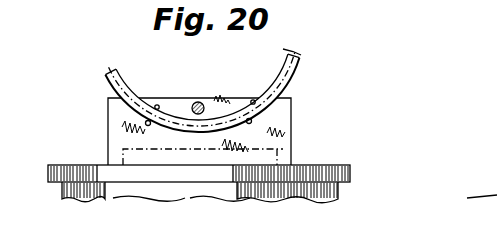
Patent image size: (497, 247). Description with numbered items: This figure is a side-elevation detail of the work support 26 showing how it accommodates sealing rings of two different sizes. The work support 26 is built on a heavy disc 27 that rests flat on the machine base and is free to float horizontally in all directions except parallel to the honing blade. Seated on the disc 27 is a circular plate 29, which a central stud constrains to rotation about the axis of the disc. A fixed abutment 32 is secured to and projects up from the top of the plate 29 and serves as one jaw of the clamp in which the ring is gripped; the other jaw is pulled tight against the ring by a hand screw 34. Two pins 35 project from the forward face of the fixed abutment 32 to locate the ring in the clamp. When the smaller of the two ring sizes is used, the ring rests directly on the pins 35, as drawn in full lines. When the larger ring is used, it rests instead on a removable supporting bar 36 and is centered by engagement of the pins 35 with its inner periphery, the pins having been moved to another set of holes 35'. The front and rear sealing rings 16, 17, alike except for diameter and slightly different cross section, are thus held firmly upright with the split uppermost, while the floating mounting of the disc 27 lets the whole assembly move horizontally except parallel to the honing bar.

The front sealing ring 16 is at (290, 80).
The rear sealing ring 17 is at (300, 58).
The work support 26 is at (229, 158).
The heavy disc 27 is at (342, 189).
The circular plate 29 is at (352, 165).
The fixed abutment 32 is at (187, 79).
The hand screw 34 is at (203, 102).
The pins 35 is at (194, 131).
The holes 35' is at (206, 81).
The removable supporting bar 36 is at (292, 147).